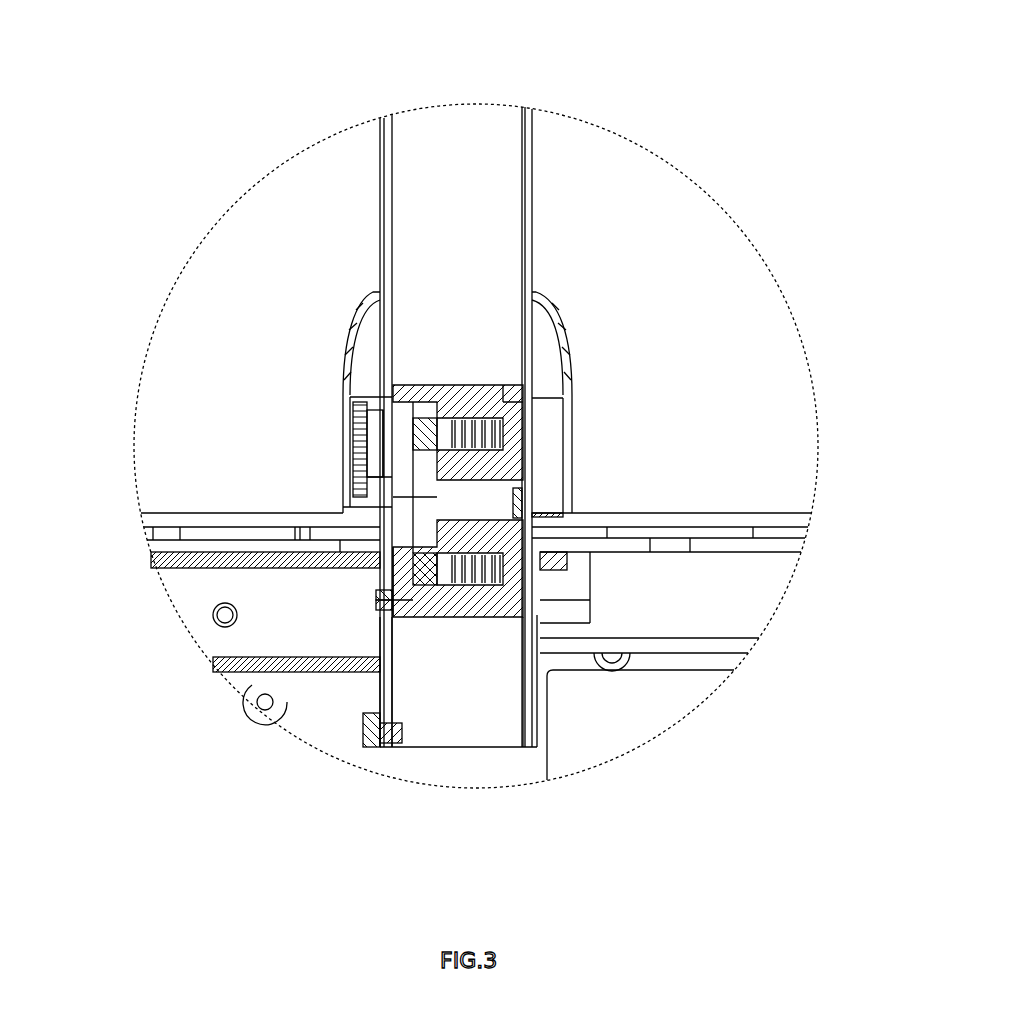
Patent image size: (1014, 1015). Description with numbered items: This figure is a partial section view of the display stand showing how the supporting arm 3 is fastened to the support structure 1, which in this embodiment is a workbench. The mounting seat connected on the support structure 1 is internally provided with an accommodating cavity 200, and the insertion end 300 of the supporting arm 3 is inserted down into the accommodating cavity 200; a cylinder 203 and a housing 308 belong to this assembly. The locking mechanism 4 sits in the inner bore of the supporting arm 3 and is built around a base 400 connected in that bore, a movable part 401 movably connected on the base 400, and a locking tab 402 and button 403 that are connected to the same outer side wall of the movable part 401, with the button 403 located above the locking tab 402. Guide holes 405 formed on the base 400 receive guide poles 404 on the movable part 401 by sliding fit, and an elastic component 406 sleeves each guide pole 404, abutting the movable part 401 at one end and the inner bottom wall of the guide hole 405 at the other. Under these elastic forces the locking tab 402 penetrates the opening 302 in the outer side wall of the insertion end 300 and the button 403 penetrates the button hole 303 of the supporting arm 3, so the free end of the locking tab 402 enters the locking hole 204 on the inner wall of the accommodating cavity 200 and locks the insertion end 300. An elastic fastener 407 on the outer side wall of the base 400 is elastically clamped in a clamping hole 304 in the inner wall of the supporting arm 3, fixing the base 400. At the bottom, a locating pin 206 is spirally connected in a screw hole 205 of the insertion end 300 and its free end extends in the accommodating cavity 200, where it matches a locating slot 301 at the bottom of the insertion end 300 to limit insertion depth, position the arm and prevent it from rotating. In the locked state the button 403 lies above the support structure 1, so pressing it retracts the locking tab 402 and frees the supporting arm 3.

The support structure 1 is at (730, 512).
The supporting arm 3 is at (392, 163).
The locking mechanism 4 is at (433, 377).
The accommodating cavity 200 is at (477, 733).
The cylinder 203 is at (377, 658).
The locking hole 204 is at (385, 607).
The screw hole 205 is at (380, 740).
The locating pin 206 is at (370, 740).
The insertion end 300 is at (528, 722).
The locating slot 301 is at (392, 740).
The opening 302 is at (384, 592).
The button hole 303 is at (403, 397).
The clamping hole 304 is at (523, 493).
The housing 308 is at (512, 398).
The base 400 is at (490, 600).
The movable part 401 is at (400, 523).
The locking tab 402 is at (380, 603).
The button 403 is at (360, 440).
The guide pole 404 is at (430, 423).
The guide hole 405 is at (507, 557).
The elastic component 406 is at (497, 437).
The elastic fastener 407 is at (523, 493).